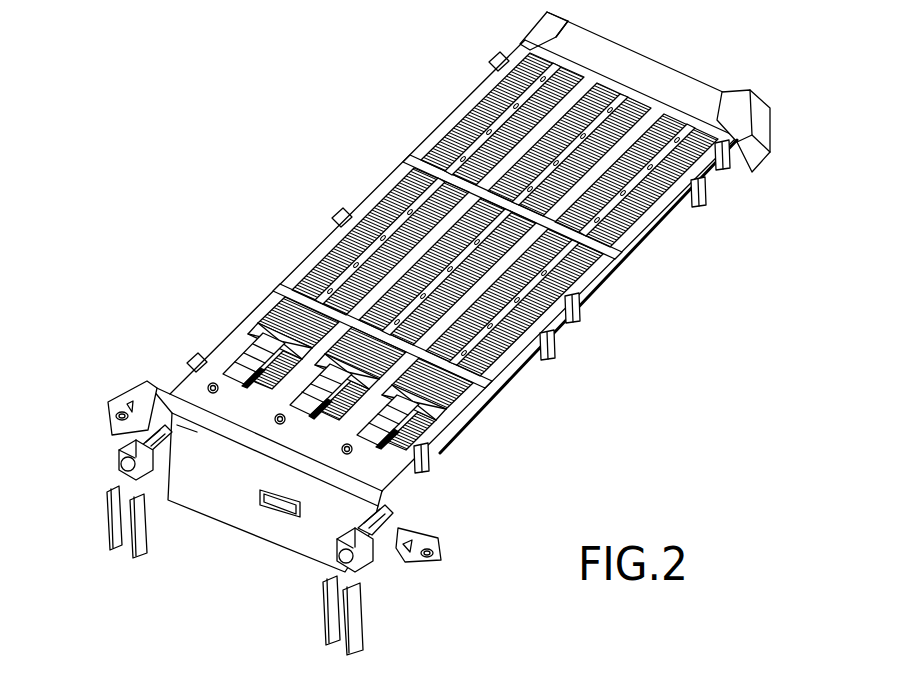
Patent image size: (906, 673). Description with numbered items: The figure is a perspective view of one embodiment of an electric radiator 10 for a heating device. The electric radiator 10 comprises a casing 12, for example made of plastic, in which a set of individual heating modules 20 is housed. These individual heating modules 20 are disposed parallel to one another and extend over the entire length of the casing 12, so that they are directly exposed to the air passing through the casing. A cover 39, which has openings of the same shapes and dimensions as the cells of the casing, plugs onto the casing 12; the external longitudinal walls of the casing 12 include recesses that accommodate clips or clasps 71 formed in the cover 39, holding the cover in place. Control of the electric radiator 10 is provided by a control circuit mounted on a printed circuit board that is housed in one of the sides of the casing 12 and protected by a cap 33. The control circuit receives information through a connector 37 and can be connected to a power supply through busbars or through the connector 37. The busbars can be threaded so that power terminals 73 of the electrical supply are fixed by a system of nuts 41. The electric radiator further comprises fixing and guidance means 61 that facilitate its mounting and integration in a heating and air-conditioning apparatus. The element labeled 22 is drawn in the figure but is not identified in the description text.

The electric radiator 10 is at (366, 130).
The casing 12 is at (778, 164).
The individual heating modules 20 is at (627, 220).
The PTC element 22 is at (597, 256).
The cap 33 is at (232, 518).
The connector 37 is at (268, 518).
The cover 39 is at (672, 80).
The nuts 41 is at (122, 452).
The fixing and guidance means 61 is at (112, 408).
The clips or clasps 71 is at (732, 172).
The power terminals 73 is at (108, 523).